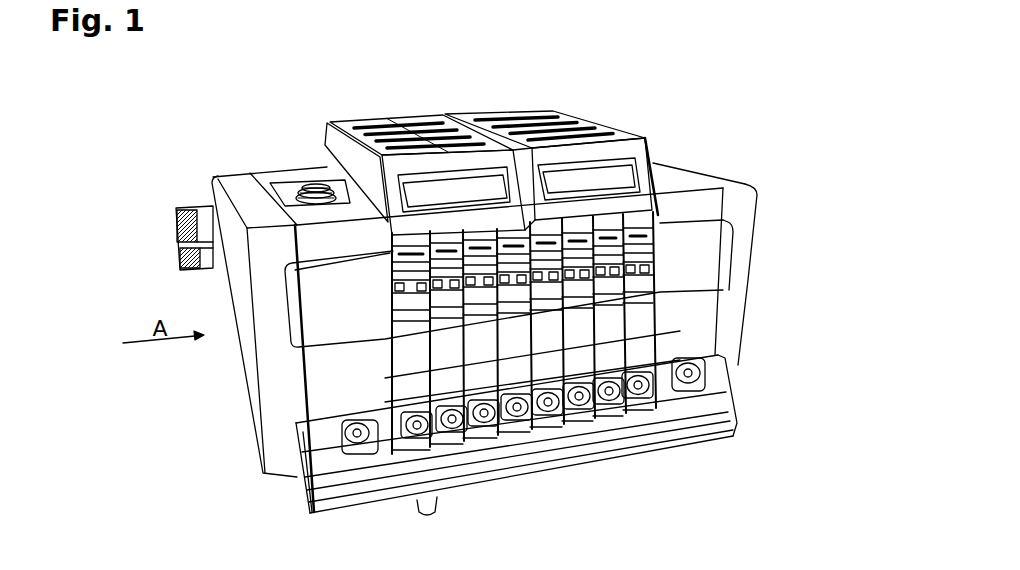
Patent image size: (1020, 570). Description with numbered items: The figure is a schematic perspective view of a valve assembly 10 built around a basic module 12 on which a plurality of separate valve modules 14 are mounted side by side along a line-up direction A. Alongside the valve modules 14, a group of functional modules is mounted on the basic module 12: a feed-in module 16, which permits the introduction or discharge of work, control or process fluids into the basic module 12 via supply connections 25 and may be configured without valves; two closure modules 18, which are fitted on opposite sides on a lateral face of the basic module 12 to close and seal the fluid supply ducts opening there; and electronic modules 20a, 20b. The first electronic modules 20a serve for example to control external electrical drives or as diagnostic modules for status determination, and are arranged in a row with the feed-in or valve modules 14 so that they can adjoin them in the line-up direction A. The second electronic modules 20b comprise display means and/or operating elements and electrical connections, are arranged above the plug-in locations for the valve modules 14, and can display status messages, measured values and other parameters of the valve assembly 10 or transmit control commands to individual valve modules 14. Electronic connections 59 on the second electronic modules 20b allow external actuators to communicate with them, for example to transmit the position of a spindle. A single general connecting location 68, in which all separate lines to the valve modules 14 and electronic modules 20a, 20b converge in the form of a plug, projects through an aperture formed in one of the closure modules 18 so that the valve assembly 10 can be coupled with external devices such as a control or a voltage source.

The valve assembly 10 is at (143, 113).
The basic module 12 is at (718, 421).
The valve modules 14 is at (604, 333).
The feed-in module 16 is at (672, 182).
The closure modules 18 is at (230, 176).
The first electronic modules 20a is at (641, 318).
The second electronic modules 20b is at (421, 165).
The supply connections 25 is at (290, 180).
The electronic connections 59 is at (372, 115).
The connecting location 68 is at (185, 205).